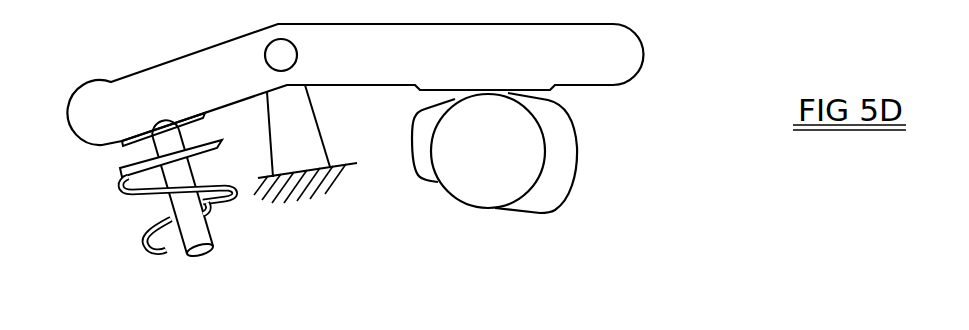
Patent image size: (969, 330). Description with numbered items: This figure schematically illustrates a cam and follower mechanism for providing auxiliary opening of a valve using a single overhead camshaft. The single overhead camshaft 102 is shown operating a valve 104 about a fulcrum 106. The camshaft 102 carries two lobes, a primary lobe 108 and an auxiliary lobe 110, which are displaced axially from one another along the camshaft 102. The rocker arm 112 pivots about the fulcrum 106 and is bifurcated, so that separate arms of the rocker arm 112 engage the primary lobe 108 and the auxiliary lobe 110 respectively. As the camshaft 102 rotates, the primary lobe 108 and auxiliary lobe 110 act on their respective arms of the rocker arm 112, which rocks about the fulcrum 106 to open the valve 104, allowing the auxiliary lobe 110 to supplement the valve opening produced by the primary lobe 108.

The overhead camshaft 102 is at (457, 198).
The valve 104 is at (208, 232).
The fulcrum 106 is at (278, 52).
The primary lobe 108 is at (573, 173).
The auxiliary lobe 110 is at (410, 150).
The rocker arm 112 is at (618, 24).